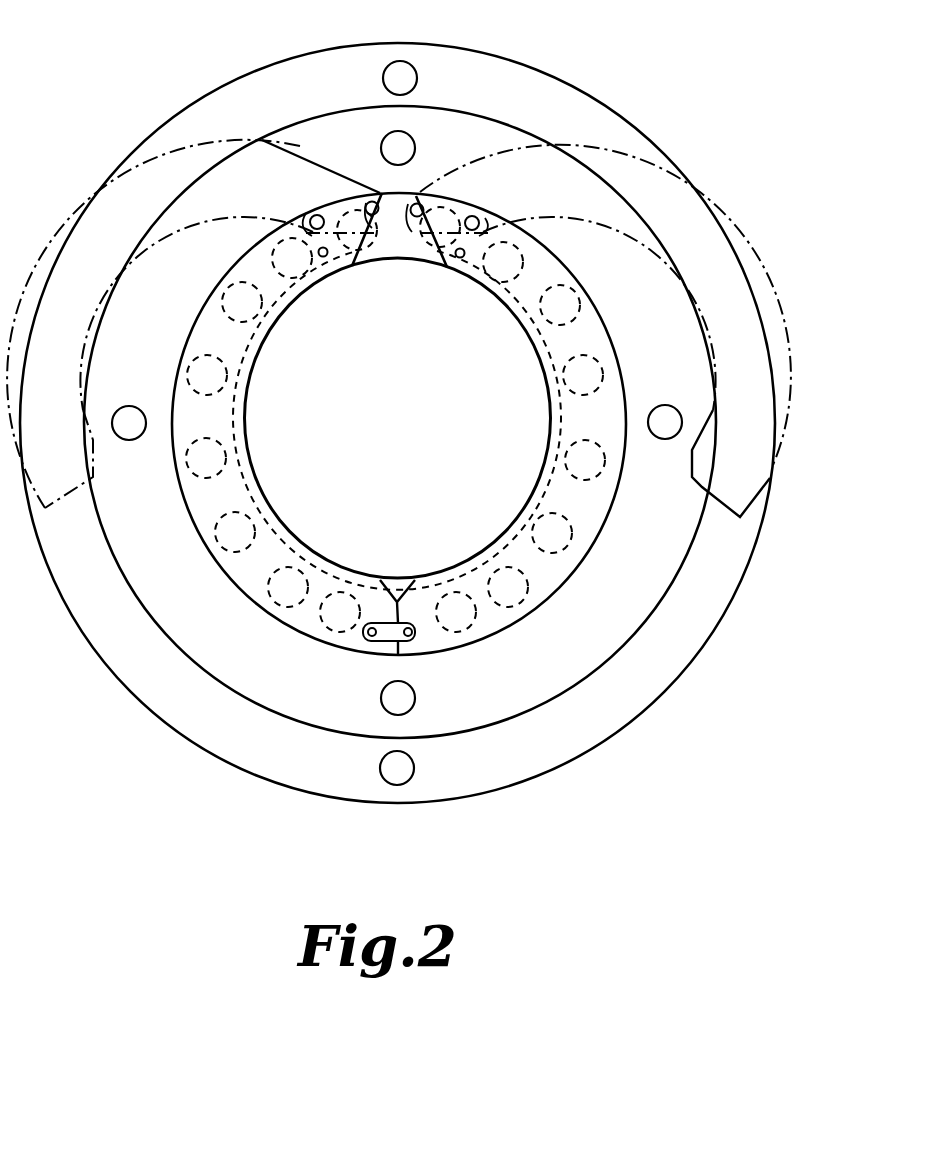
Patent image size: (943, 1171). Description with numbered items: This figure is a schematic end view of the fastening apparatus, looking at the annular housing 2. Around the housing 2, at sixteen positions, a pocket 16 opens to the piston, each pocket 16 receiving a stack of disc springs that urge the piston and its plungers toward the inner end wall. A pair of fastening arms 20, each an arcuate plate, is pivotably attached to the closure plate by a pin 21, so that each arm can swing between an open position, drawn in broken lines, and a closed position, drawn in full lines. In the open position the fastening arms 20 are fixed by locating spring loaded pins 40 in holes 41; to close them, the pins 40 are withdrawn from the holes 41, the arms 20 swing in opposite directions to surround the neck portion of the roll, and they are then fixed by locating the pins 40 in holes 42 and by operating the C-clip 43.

The annular housing 2 is at (397, 238).
The pocket 16 is at (243, 525).
The fastening arms 20 is at (67, 213).
The pin 21 is at (418, 201).
The spring loaded pins 40 is at (308, 213).
The holes 41 is at (323, 216).
The holes 42 is at (460, 258).
The C-clip 43 is at (385, 636).